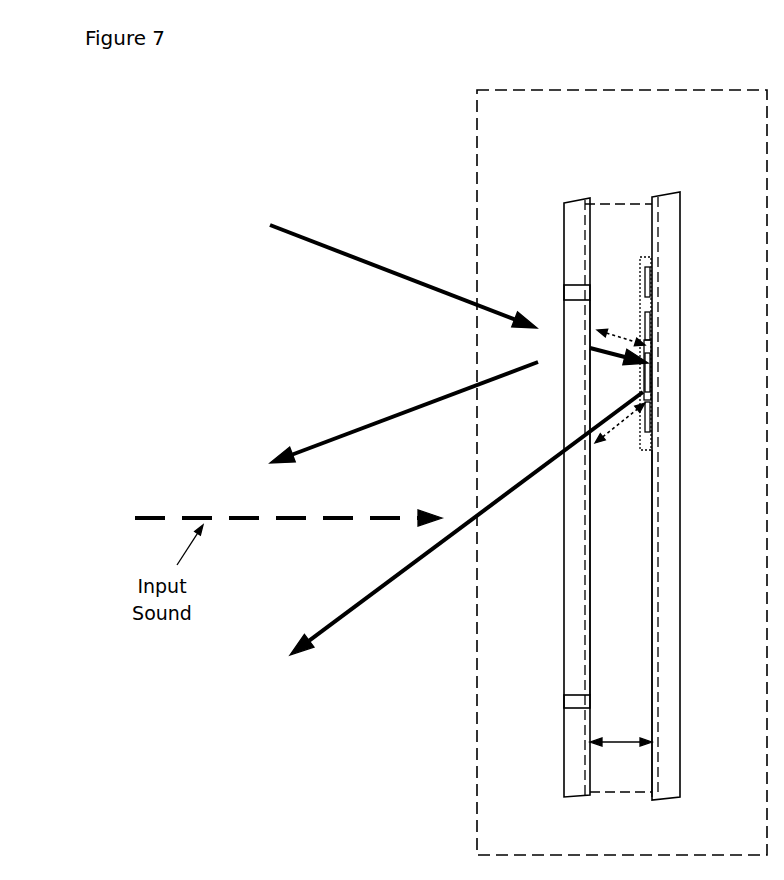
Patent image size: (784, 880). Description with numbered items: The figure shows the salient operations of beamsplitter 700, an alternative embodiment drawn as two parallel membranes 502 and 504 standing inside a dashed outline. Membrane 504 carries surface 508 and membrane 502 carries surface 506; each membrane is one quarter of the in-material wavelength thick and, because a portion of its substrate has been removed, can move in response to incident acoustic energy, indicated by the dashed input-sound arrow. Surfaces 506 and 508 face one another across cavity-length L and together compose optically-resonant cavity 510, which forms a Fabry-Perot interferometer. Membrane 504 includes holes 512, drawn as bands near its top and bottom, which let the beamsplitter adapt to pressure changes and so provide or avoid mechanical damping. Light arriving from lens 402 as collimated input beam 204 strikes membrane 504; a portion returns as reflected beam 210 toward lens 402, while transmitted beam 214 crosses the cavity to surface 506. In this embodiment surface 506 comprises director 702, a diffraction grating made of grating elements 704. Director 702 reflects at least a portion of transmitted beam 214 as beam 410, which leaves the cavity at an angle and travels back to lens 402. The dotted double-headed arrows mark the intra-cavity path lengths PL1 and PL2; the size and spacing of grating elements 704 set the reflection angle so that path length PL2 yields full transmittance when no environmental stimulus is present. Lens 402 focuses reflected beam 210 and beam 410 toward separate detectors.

The beamsplitter 700 is at (630, 119).
The membrane 502 is at (668, 196).
The membrane 504 is at (580, 247).
The surface 506 is at (652, 498).
The surface 508 is at (590, 530).
The optically-resonant cavity 510 is at (623, 793).
The holes 512 is at (578, 293).
The director 702 is at (643, 260).
The grating elements 704 is at (647, 282).
The transmitted beam 214 is at (655, 338).
The intra-cavity path length PL1 is at (627, 340).
The intra-cavity path length PL2 is at (622, 423).
The cavity-length L is at (617, 747).
The input beam 204 is at (447, 297).
The reflected beam 210 is at (448, 393).
The beam 410 is at (343, 617).
The lens 402 is at (263, 479).